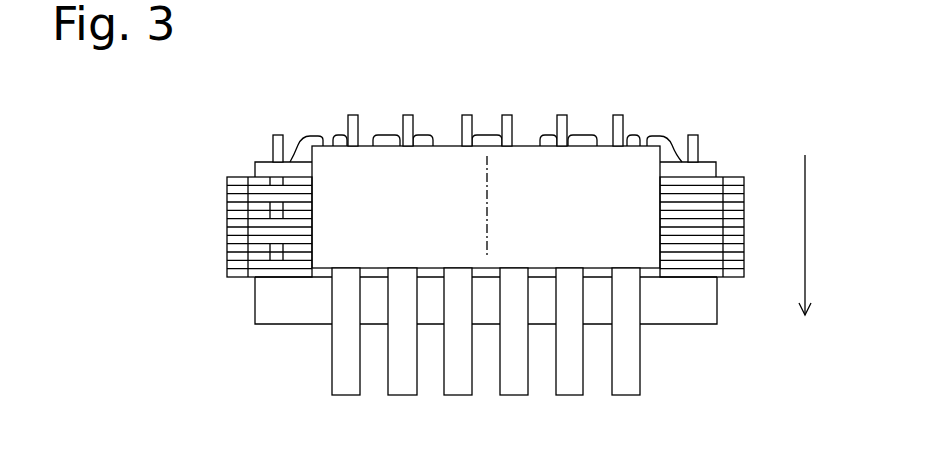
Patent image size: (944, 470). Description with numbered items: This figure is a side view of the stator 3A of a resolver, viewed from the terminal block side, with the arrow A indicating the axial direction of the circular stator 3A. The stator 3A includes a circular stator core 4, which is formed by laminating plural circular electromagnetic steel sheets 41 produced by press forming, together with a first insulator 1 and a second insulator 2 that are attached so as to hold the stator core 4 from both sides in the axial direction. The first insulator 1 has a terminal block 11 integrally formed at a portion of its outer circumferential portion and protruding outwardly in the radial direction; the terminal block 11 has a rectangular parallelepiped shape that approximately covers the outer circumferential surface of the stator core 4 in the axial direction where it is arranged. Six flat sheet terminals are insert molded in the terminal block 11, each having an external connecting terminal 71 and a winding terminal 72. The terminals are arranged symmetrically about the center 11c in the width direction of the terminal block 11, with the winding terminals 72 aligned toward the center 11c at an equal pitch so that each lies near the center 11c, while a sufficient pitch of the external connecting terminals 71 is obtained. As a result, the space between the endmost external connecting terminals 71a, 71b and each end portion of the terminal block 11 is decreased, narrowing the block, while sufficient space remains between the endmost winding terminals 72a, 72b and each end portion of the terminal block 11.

The first insulator 1 is at (705, 162).
The second insulator 2 is at (255, 300).
The stator 3A is at (250, 130).
The stator core 4 is at (744, 200).
The electromagnetic steel sheets 41 is at (227, 200).
The terminal block 11 is at (528, 142).
The center of the terminal block 11c is at (487, 208).
The external connecting terminal 71 is at (510, 383).
The external connecting terminal 71a is at (343, 383).
The external connecting terminal 71b is at (640, 367).
The winding terminal 72 is at (415, 122).
The winding terminal 72a is at (348, 122).
The winding terminal 72b is at (623, 123).
The axial direction A is at (813, 235).